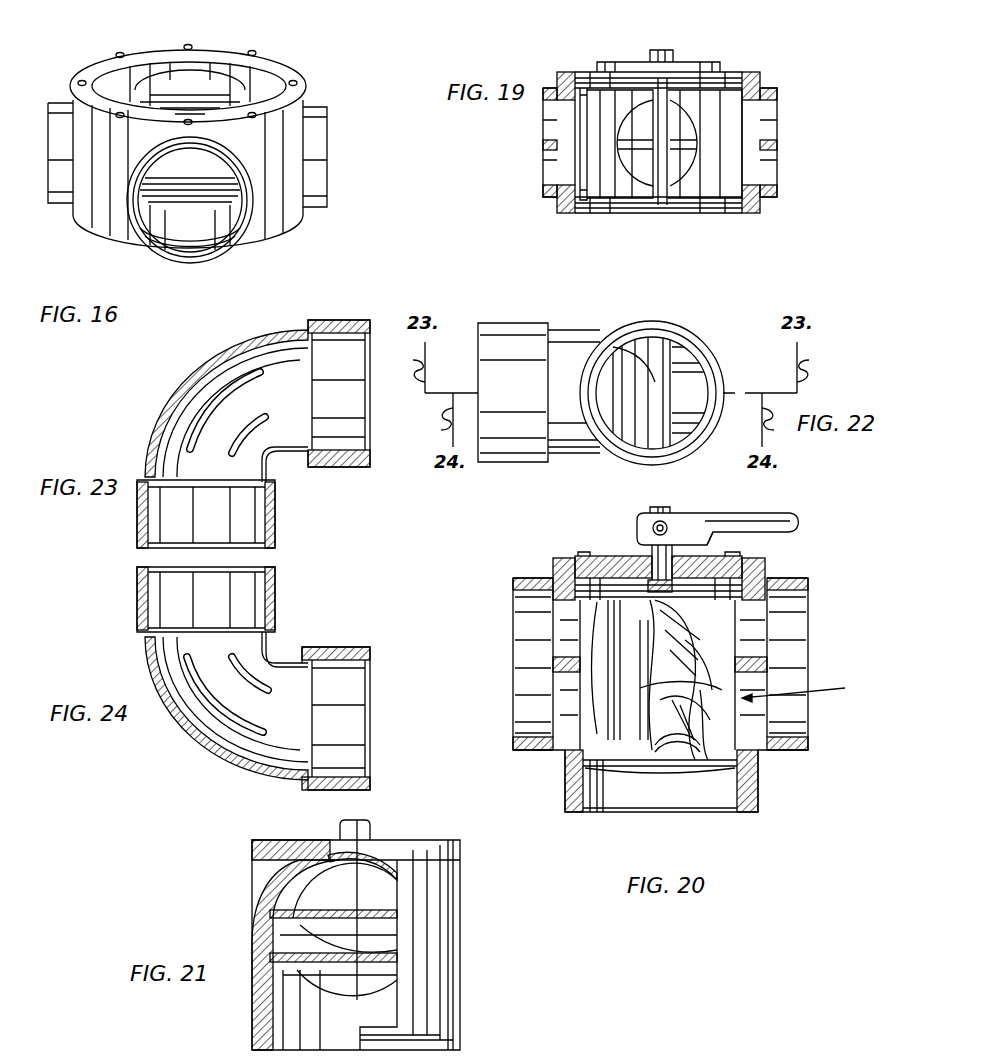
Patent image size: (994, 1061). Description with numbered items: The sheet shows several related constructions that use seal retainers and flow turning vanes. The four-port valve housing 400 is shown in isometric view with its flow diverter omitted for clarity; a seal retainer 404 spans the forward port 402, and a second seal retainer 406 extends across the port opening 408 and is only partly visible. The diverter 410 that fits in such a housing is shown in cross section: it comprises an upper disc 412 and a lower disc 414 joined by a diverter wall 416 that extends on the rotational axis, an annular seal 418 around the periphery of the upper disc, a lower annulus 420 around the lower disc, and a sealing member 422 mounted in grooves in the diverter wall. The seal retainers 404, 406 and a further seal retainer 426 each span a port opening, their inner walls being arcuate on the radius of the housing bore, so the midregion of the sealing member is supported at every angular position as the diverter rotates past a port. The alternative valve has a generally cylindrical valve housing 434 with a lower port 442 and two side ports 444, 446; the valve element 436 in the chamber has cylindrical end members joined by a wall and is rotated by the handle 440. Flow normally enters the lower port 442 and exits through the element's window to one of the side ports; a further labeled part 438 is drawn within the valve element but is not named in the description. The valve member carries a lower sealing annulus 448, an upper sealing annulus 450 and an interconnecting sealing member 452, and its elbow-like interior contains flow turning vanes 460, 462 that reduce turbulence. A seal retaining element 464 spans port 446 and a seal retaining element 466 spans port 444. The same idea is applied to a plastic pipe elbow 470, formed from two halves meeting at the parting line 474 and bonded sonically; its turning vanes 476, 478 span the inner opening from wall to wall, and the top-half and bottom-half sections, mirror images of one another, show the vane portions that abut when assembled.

In FIG. 16, the four-port valve housing 400 is at (97, 243).
In FIG. 16, the forward port 402 is at (187, 263).
In FIG. 16, the seal retainer 404 is at (205, 190).
In FIG. 19, the seal retainer 404 is at (760, 147).
In FIG. 16, the seal retainer 406 is at (183, 103).
In FIG. 19, the seal retainer 406 is at (573, 140).
In FIG. 16, the port opening 408 is at (153, 88).
In FIG. 19, the diverter 410 is at (732, 63).
In FIG. 19, the upper disc 412 is at (592, 72).
In FIG. 19, the lower disc 414 is at (600, 213).
In FIG. 19, the diverter wall 416 is at (667, 157).
In FIG. 19, the annular seal 418 is at (705, 78).
In FIG. 19, the lower annulus 420 is at (582, 213).
In FIG. 19, the sealing member 422 is at (660, 190).
In FIG. 19, the seal retainer 426 is at (685, 140).
In FIG. 20, the valve housing 434 is at (565, 775).
In FIG. 20, the valve element 436 is at (813, 690).
In FIG. 20, the plug 438 is at (698, 733).
In FIG. 20, the handle 440 is at (780, 513).
In FIG. 20, the lower port 442 is at (577, 813).
In FIG. 20, the side port 444 is at (517, 682).
In FIG. 20, the side port 446 is at (808, 640).
In FIG. 20, the lower sealing annulus 448 is at (642, 737).
In FIG. 20, the upper sealing annulus 450 is at (593, 590).
In FIG. 21, the upper sealing annulus 450 is at (458, 845).
In FIG. 20, the interconnecting sealing member 452 is at (618, 692).
In FIG. 21, the interconnecting sealing member 452 is at (428, 1007).
In FIG. 20, the flow turning vane 460 is at (657, 700).
In FIG. 21, the flow turning vane 460 is at (377, 962).
In FIG. 20, the flow turning vane 462 is at (690, 680).
In FIG. 21, the flow turning vane 462 is at (377, 920).
In FIG. 20, the seal retaining element 464 is at (758, 647).
In FIG. 20, the seal retaining element 466 is at (565, 655).
In FIG. 22, the elbow 470 is at (700, 347).
In FIG. 22, the parting line 474 is at (515, 397).
In FIG. 23, the turning vane 476 is at (190, 425).
In FIG. 24, the turning vane 476 is at (213, 712).
In FIG. 22, the turning vane 476 is at (662, 380).
In FIG. 23, the turning vane 478 is at (247, 437).
In FIG. 24, the turning vane 478 is at (250, 668).
In FIG. 22, the turning vane 478 is at (615, 397).